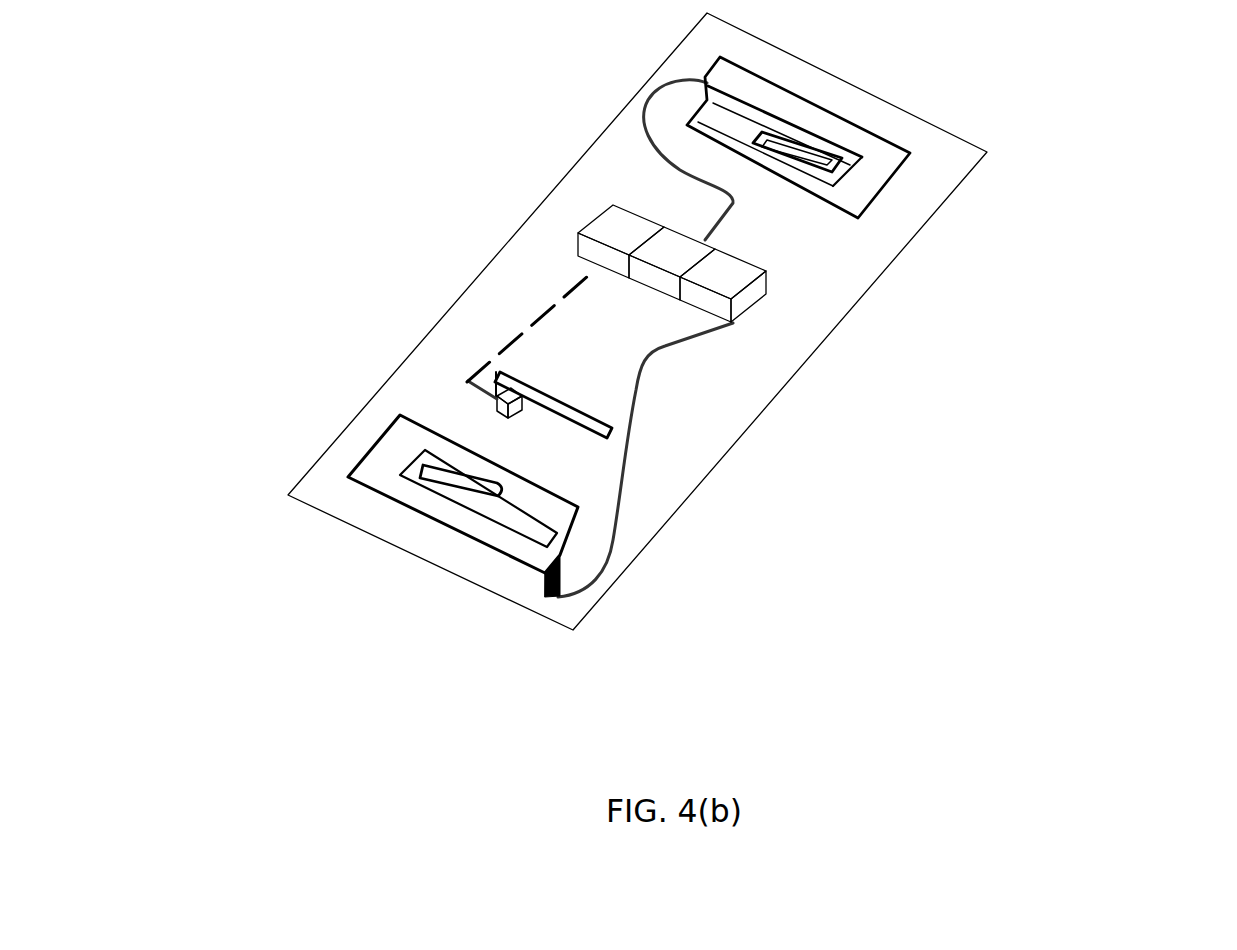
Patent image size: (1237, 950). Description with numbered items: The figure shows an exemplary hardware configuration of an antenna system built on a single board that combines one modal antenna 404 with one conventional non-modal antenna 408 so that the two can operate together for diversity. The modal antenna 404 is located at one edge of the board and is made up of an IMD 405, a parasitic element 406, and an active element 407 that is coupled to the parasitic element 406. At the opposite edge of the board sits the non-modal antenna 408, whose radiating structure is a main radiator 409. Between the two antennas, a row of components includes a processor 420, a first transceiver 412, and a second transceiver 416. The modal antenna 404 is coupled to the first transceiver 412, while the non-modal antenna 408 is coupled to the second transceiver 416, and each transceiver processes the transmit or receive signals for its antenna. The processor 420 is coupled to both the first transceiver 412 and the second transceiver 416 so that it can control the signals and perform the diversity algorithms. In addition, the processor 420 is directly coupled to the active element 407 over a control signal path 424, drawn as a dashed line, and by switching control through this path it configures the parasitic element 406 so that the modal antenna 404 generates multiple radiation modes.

The modal antenna 404 is at (386, 308).
The IMD 405 is at (480, 545).
The parasitic element 406 is at (577, 393).
The active element 407 is at (518, 408).
The non-modal antenna 408 is at (918, 265).
The main radiator 409 is at (822, 107).
The transceiver 1 412 is at (760, 287).
The transceiver 2 416 is at (653, 278).
The processor 420 is at (618, 232).
The control signal path 424 is at (558, 298).